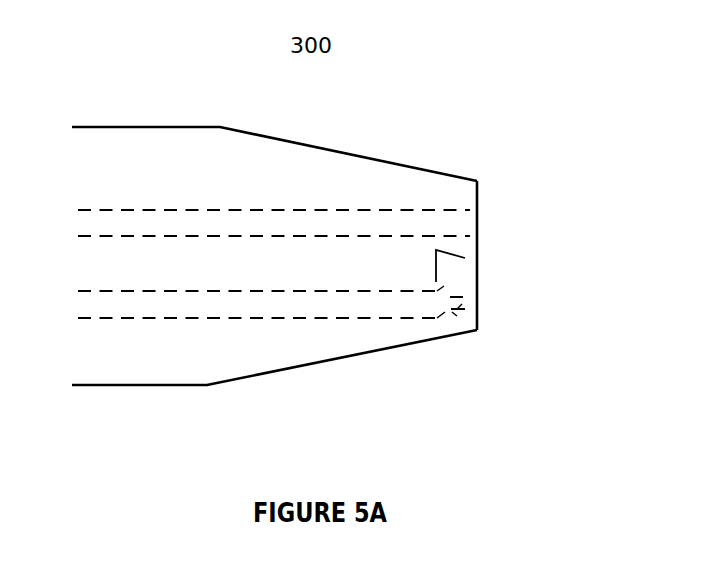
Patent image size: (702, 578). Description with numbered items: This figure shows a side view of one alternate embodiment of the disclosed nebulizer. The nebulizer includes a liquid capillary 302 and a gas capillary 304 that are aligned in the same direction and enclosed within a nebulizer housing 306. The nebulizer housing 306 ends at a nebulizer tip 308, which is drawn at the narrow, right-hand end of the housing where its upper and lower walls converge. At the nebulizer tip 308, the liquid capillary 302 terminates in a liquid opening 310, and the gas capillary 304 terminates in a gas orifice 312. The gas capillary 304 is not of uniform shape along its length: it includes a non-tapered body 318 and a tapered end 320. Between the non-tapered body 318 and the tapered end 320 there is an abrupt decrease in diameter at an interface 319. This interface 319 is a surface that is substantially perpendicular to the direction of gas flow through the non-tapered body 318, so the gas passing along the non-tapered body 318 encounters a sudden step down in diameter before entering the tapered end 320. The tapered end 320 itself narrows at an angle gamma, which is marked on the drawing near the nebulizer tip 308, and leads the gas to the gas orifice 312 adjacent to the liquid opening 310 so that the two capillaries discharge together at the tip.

The liquid capillary 302 is at (383, 218).
The gas capillary 304 is at (217, 320).
The nebulizer housing 306 is at (137, 125).
The nebulizer tip 308 is at (478, 256).
The liquid opening 310 is at (478, 225).
The gas orifice 312 is at (478, 305).
The non-tapered body 318 is at (349, 308).
The interface 319 is at (493, 284).
The tapered end 320 is at (455, 314).